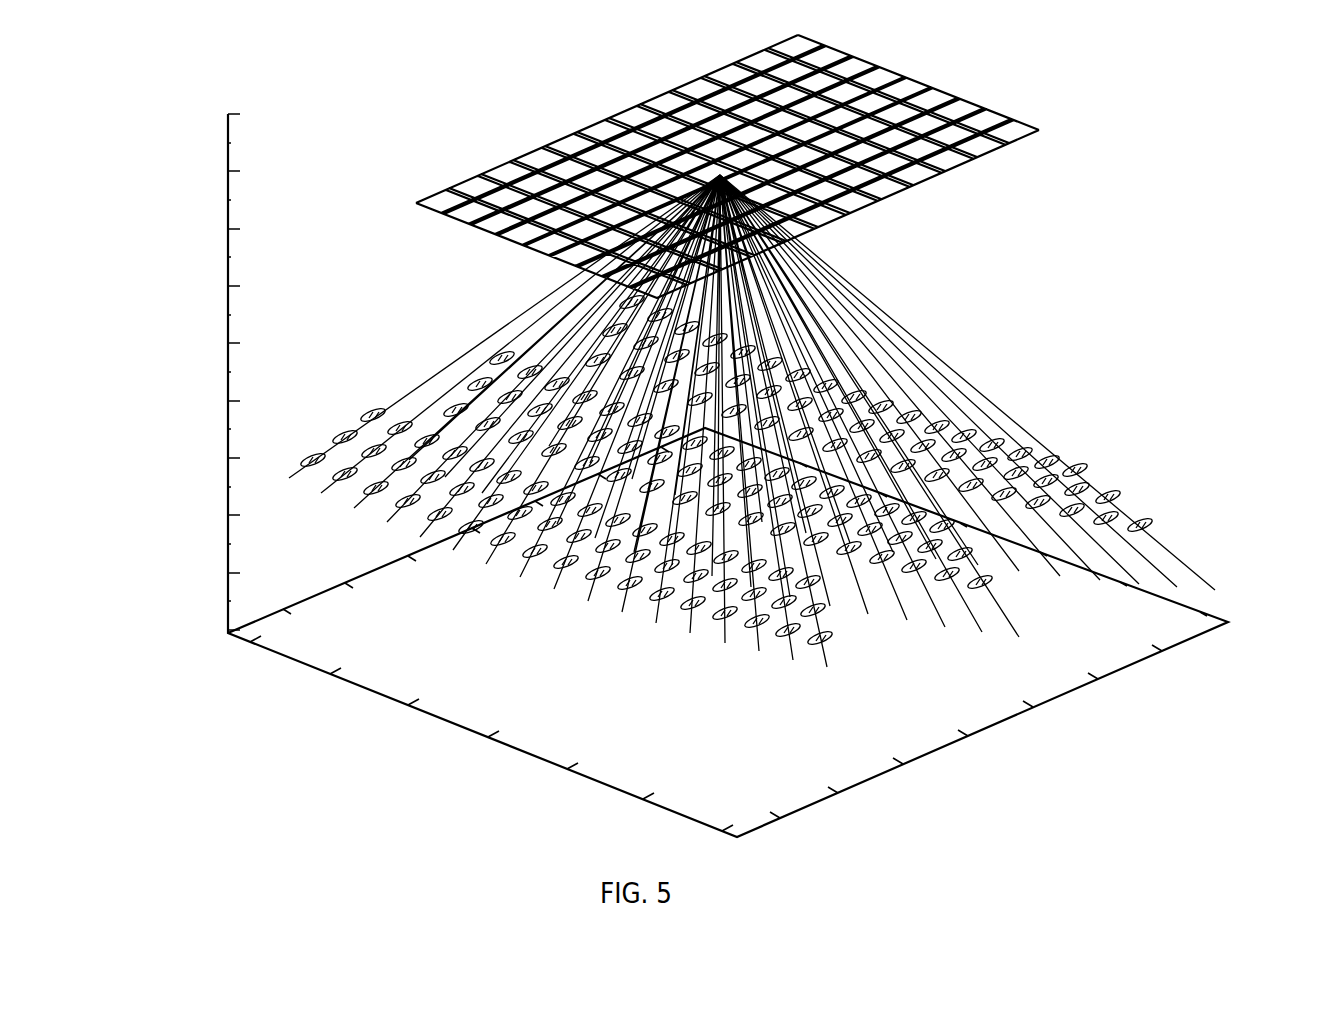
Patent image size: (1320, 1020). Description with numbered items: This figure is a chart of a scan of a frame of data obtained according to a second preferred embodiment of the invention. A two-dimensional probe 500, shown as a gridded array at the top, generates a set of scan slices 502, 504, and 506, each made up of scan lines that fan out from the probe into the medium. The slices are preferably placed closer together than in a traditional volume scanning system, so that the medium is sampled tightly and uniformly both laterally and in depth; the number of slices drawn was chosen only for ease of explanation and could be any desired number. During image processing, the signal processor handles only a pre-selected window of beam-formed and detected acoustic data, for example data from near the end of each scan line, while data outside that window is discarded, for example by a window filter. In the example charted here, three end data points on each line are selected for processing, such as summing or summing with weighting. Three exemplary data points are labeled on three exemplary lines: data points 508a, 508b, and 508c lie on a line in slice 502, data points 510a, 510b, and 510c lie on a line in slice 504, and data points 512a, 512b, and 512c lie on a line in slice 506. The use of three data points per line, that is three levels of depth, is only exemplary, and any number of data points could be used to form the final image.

The 2-D probe 500 is at (979, 105).
The scan slice 502 is at (462, 336).
The scan slice 504 is at (550, 273).
The scan slice 506 is at (893, 285).
The data point 508a is at (821, 584).
The data point 508b is at (828, 616).
The data point 508c is at (833, 642).
The data point 510a is at (955, 526).
The data point 510b is at (972, 556).
The data point 510c is at (992, 586).
The data point 512a is at (1086, 466).
The data point 512b is at (1118, 497).
The data point 512c is at (1150, 524).